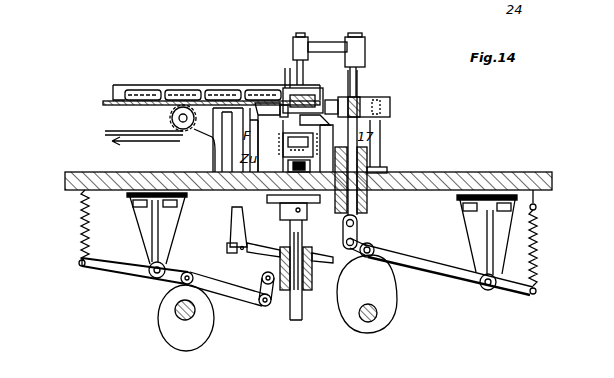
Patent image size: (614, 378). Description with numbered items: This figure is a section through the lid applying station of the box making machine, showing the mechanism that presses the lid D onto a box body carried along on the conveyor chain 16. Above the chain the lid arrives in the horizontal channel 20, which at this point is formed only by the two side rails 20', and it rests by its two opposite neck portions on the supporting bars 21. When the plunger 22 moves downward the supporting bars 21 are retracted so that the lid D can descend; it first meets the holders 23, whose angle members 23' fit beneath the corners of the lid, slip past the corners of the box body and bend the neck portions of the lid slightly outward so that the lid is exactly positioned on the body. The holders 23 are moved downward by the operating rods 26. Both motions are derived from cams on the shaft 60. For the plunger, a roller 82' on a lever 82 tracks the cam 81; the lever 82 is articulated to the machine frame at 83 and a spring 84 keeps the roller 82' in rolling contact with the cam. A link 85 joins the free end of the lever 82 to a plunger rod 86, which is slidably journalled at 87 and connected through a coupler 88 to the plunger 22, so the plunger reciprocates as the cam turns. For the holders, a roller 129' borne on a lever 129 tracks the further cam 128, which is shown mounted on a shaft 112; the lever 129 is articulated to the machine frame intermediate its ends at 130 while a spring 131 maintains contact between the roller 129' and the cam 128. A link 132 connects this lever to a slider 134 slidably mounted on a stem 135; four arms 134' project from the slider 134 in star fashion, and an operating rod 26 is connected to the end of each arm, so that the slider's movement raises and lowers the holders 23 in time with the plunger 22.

The conveyor chain 16 is at (212, 165).
The horizontal channel 20 is at (190, 117).
The side rails 20' is at (216, 61).
The lid D is at (137, 90).
The supporting bars 21 is at (307, 95).
The plunger 22 is at (287, 68).
The holders 23 is at (323, 99).
The angle members 23' is at (330, 75).
The operating rods 26 is at (232, 226).
The shaft 60 is at (175, 309).
The cam 81 is at (160, 343).
The lever 82 is at (447, 252).
The roller 82' is at (386, 241).
The articulation 83 is at (485, 290).
The spring 84 is at (535, 240).
The link 85 is at (355, 224).
The plunger rod 86 is at (360, 75).
The journal 87 is at (386, 161).
The coupler 88 is at (323, 42).
The shaft 112 is at (378, 314).
The cam 128 is at (400, 291).
The lever 129 is at (114, 277).
The roller 129' is at (224, 273).
The articulation 130 is at (147, 275).
The spring 131 is at (80, 212).
The link 132 is at (275, 295).
The slider 134 is at (306, 274).
The arms 134' is at (284, 249).
The stem 135 is at (290, 228).